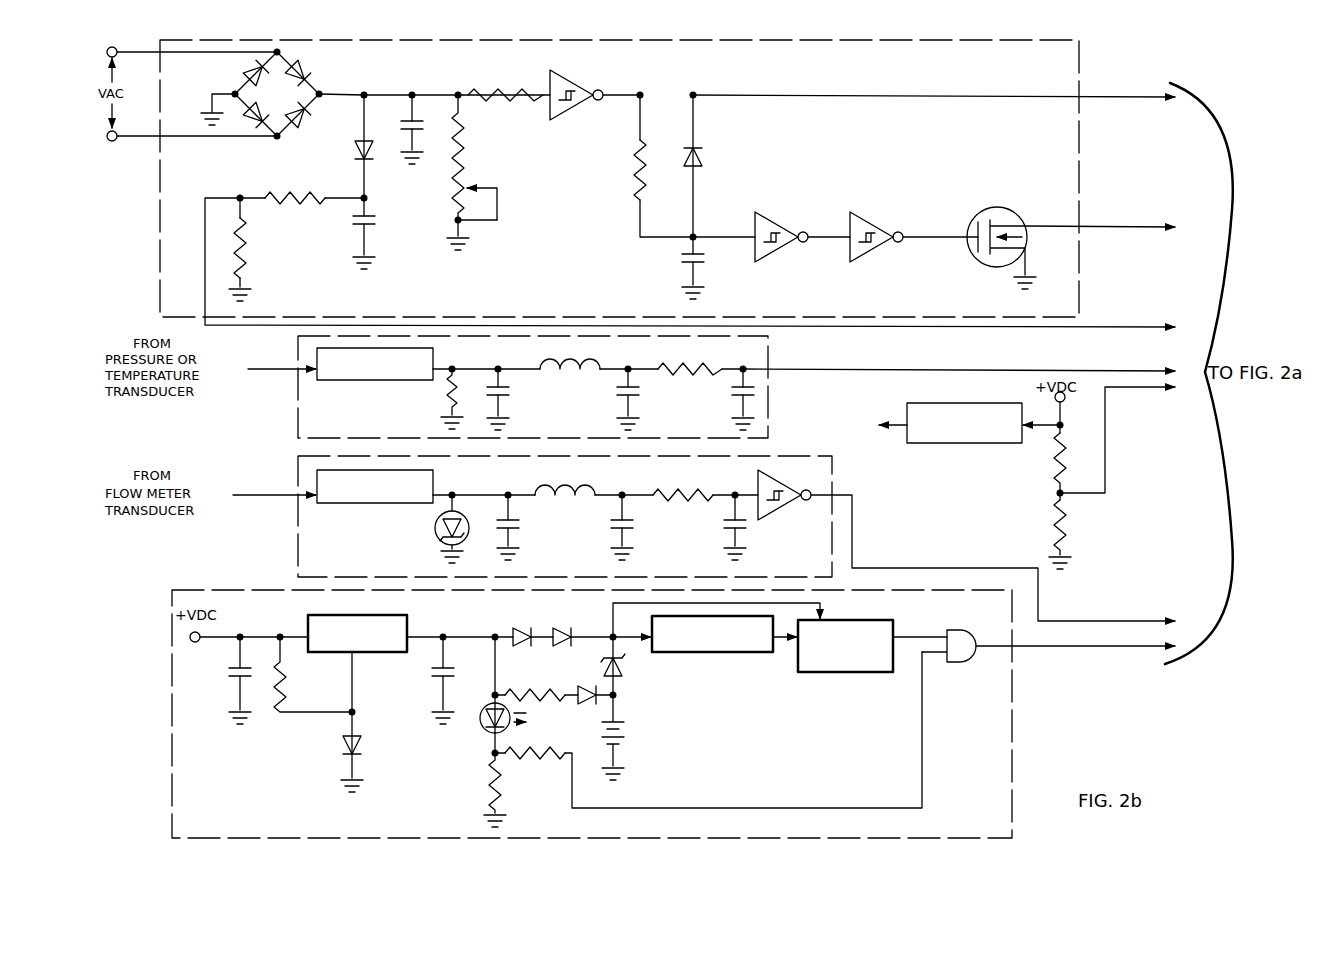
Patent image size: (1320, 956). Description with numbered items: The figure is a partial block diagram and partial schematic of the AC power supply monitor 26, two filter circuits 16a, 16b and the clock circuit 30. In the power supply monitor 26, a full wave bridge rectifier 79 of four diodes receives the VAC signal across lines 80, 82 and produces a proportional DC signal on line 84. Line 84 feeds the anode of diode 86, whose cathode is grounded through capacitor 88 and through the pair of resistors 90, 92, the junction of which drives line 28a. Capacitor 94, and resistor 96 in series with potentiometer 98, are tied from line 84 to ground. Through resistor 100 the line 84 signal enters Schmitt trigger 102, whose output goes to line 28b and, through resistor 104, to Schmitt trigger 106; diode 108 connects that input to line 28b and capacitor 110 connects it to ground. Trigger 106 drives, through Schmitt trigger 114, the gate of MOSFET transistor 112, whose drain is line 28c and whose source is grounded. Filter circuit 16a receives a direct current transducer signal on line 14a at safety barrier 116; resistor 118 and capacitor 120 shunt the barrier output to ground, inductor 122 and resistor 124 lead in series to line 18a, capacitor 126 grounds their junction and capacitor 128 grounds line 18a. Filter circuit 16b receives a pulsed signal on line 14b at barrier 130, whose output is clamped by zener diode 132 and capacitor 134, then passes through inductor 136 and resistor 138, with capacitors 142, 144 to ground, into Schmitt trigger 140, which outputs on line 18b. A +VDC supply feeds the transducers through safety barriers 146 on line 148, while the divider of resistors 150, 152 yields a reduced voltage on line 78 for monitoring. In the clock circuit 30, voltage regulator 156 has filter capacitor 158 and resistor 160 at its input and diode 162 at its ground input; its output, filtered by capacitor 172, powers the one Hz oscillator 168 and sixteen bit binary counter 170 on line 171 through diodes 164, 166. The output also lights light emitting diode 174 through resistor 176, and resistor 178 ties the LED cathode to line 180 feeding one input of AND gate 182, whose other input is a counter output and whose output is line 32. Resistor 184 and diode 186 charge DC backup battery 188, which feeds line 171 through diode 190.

The AC power supply monitor 26 is at (348, 36).
The full wave bridge rectifier 79 is at (324, 62).
The line 80 is at (110, 46).
The line 82 is at (110, 142).
The line 84 is at (386, 94).
The diode 86 is at (355, 152).
The capacitor 88 is at (370, 219).
The resistor 90 is at (295, 206).
The resistor 92 is at (245, 258).
The capacitor 94 is at (420, 130).
The resistor 96 is at (465, 143).
The potentiometer 98 is at (495, 188).
The resistor 100 is at (497, 100).
The Schmitt trigger 102 is at (588, 105).
The resistor 104 is at (634, 180).
The Schmitt trigger 106 is at (772, 250).
The diode 108 is at (705, 158).
The capacitor 110 is at (688, 256).
The MOSFET transistor 112 is at (978, 262).
The Schmitt trigger 114 is at (868, 250).
The line 28a is at (1145, 326).
The line 28b is at (762, 100).
The line 28c is at (1145, 225).
The line 14a is at (280, 372).
The line 14b is at (281, 494).
The filter circuit 16a is at (295, 424).
The filter circuit 16b is at (296, 456).
The safety barrier 116 is at (364, 382).
The resistor 118 is at (442, 396).
The capacitor 120 is at (506, 392).
The inductor 122 is at (548, 362).
The resistor 124 is at (706, 380).
The capacitor 126 is at (636, 392).
The capacitor 128 is at (758, 388).
The line 18a is at (966, 370).
The line 18b is at (965, 568).
The barrier 130 is at (364, 506).
The zener diode 132 is at (437, 532).
The capacitor 134 is at (516, 514).
The inductor 136 is at (548, 488).
The resistor 138 is at (685, 502).
The Schmitt trigger 140 is at (786, 506).
The capacitor 142 is at (630, 528).
The capacitor 144 is at (742, 532).
The safety barriers 146 is at (984, 403).
The line 148 is at (892, 423).
The resistor 150 is at (1052, 462).
The resistor 152 is at (1052, 514).
The line 78 is at (1100, 495).
The clock circuit 30 is at (170, 797).
The voltage regulator 156 is at (352, 615).
The filter capacitor 158 is at (234, 676).
The resistor 160 is at (284, 690).
The diode 162 is at (344, 746).
The diode 164 is at (522, 626).
The diode 166 is at (569, 630).
The one Hz oscillator 168 is at (712, 652).
The sixteen bit binary counter 170 is at (836, 672).
The line 171 is at (604, 641).
The filter capacitor 172 is at (434, 682).
The light emitting diode 174 is at (483, 727).
The resistor 176 is at (490, 781).
The resistor 178 is at (528, 754).
The line 180 is at (718, 806).
The AND gate 182 is at (962, 672).
The resistor 184 is at (526, 694).
The diode 186 is at (586, 704).
The DC backup battery 188 is at (628, 738).
The diode 190 is at (626, 663).
The line 32 is at (1034, 648).